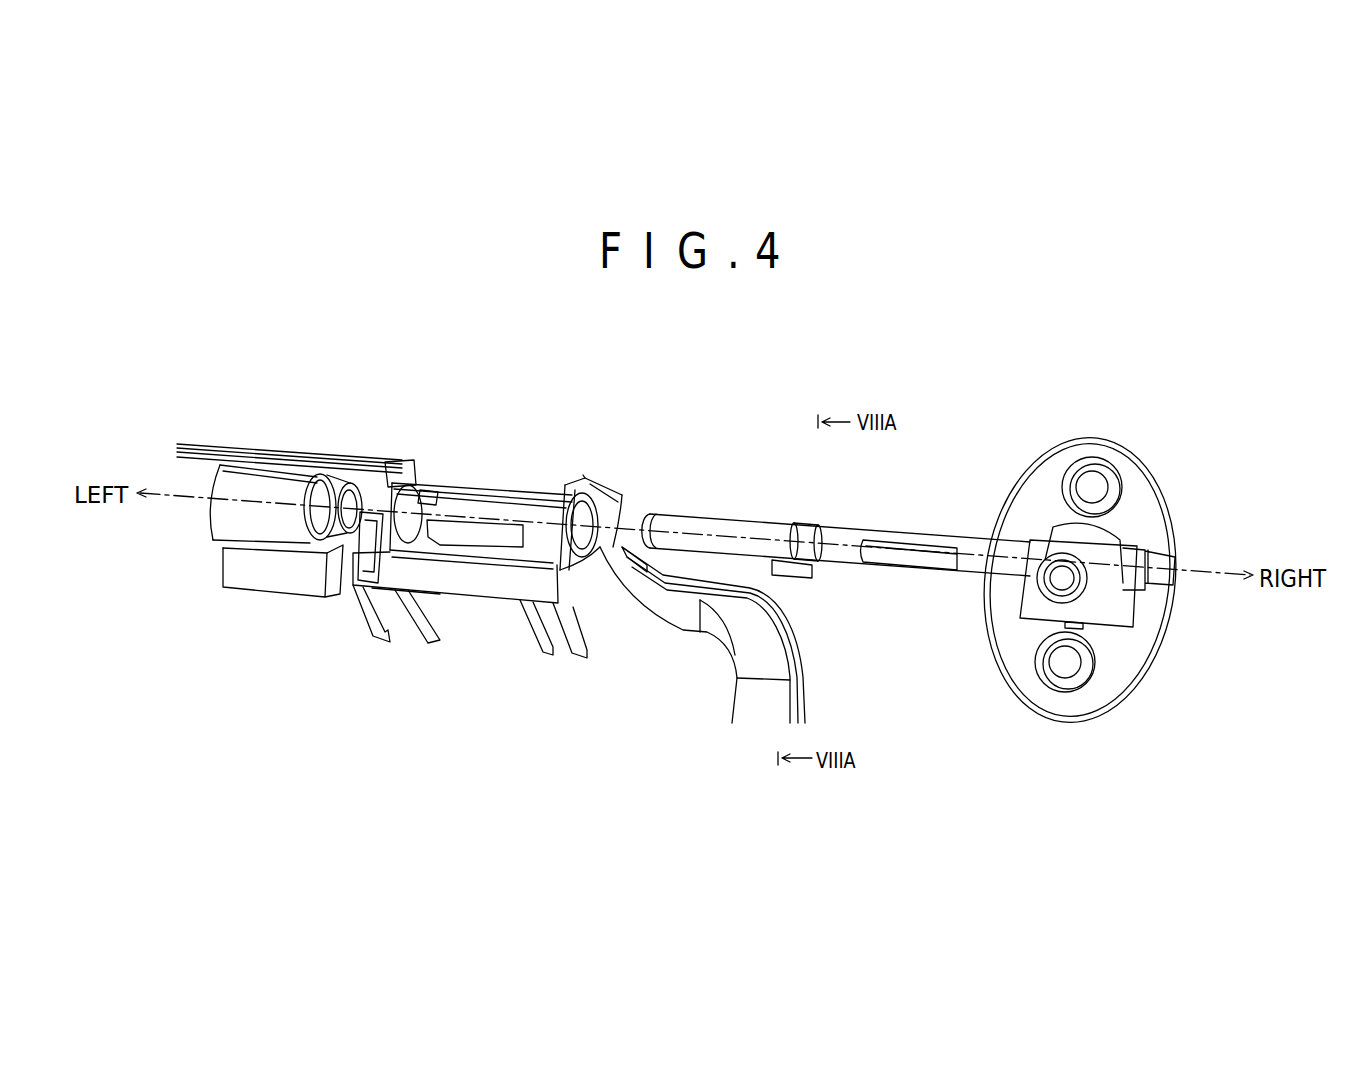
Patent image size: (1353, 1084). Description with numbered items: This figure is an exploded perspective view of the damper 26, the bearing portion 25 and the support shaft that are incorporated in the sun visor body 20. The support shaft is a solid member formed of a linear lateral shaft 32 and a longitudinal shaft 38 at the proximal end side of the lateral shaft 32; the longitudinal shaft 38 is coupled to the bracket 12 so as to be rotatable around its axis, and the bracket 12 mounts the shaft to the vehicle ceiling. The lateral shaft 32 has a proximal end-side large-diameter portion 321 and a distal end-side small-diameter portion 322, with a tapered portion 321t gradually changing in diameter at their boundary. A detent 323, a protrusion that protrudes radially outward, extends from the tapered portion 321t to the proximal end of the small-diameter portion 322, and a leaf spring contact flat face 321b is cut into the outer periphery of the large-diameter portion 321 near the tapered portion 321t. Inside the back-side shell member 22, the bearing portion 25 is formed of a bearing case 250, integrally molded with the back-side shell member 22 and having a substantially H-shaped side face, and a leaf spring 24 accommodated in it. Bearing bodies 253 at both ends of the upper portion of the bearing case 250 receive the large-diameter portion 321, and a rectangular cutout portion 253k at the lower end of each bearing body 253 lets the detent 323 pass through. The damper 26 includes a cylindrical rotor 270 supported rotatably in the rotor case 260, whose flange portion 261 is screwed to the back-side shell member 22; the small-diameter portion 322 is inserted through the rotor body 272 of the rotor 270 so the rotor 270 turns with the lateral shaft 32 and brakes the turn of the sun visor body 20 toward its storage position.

The sun visor body 20 is at (264, 421).
The damper 26 is at (234, 479).
The rotor case 260 is at (232, 527).
The flange portion 261 is at (268, 580).
The rotor 270 is at (326, 479).
The rotor body 272 is at (342, 464).
The leaf spring 24 is at (509, 549).
The bearing portion 25 is at (491, 459).
The bearing case 250 is at (500, 590).
The bearing body 253 is at (422, 493).
The rectangular cutout portion 253k is at (592, 600).
The back-side shell member 22 is at (682, 616).
The lateral shaft 32 is at (836, 548).
The large-diameter portion 321 is at (912, 532).
The small-diameter portion 322 is at (698, 528).
The tapered portion 321t is at (812, 527).
The leaf spring contact flat face 321b is at (923, 560).
The detent 323 is at (790, 567).
The bracket 12 is at (1143, 525).
The longitudinal shaft 38 is at (1050, 576).